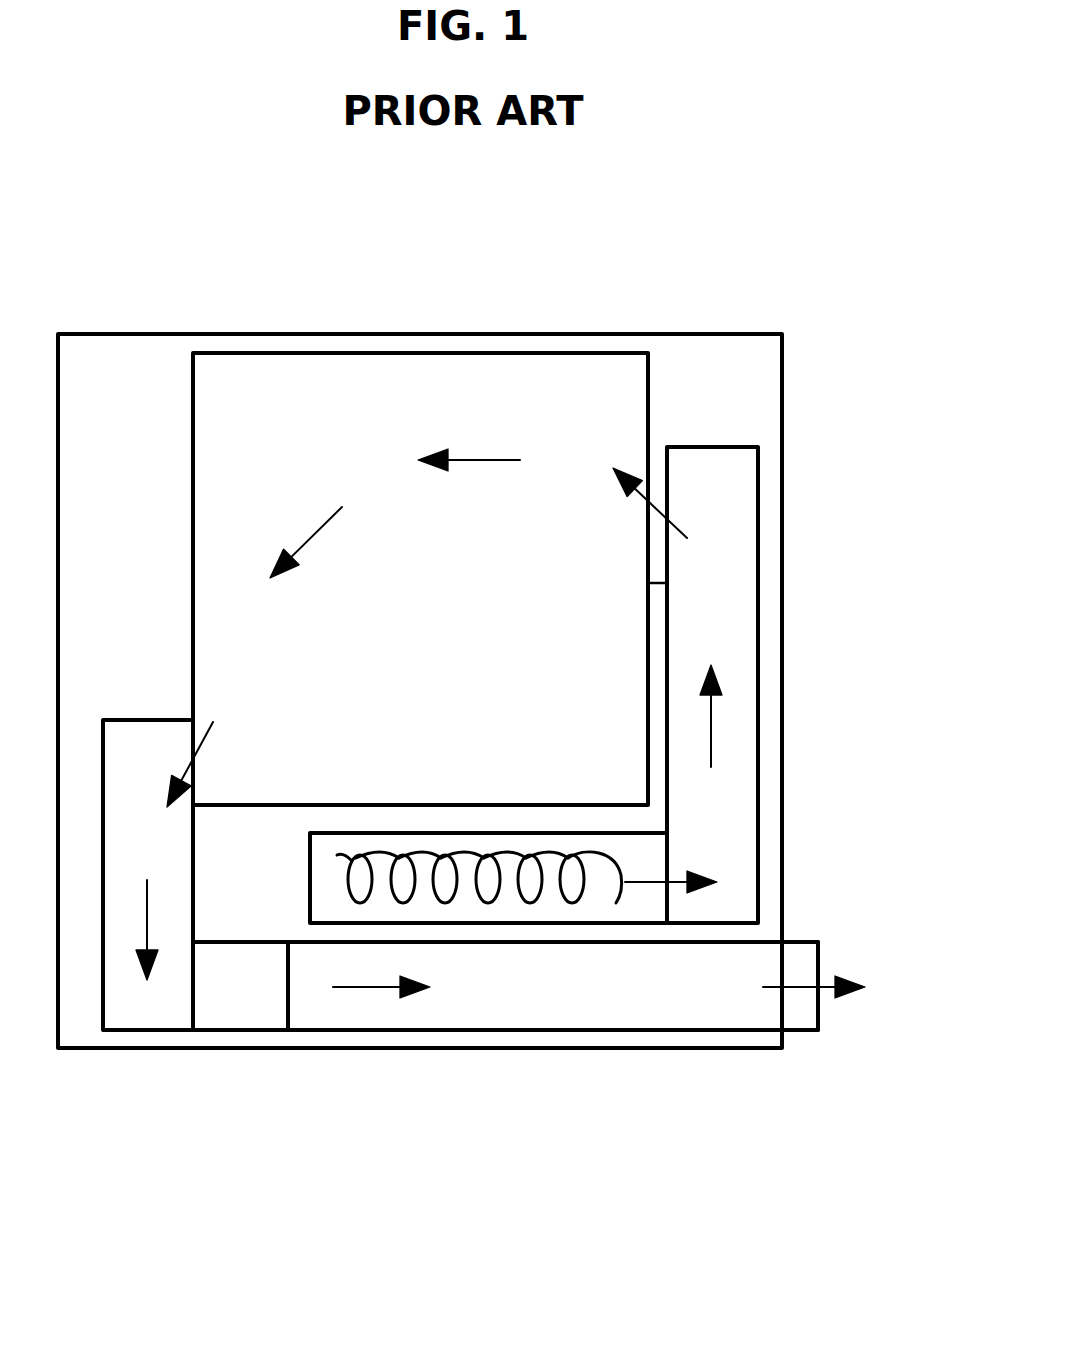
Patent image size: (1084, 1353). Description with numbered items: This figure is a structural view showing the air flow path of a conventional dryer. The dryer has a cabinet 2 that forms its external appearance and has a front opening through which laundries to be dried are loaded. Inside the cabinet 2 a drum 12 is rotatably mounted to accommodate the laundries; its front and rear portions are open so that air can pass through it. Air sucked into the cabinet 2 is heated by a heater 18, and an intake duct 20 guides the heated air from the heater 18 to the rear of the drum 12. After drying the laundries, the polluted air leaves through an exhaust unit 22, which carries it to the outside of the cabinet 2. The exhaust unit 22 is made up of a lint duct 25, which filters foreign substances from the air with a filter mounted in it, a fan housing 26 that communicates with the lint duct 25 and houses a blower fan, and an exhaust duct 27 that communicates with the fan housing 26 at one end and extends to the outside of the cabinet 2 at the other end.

The cabinet 2 is at (600, 335).
The drum 12 is at (318, 390).
The heater 18 is at (583, 897).
The intake duct 20 is at (643, 857).
The exhaust unit 22 is at (497, 1132).
The lint duct 25 is at (140, 1005).
The fan housing 26 is at (232, 1005).
The exhaust duct 27 is at (576, 1079).